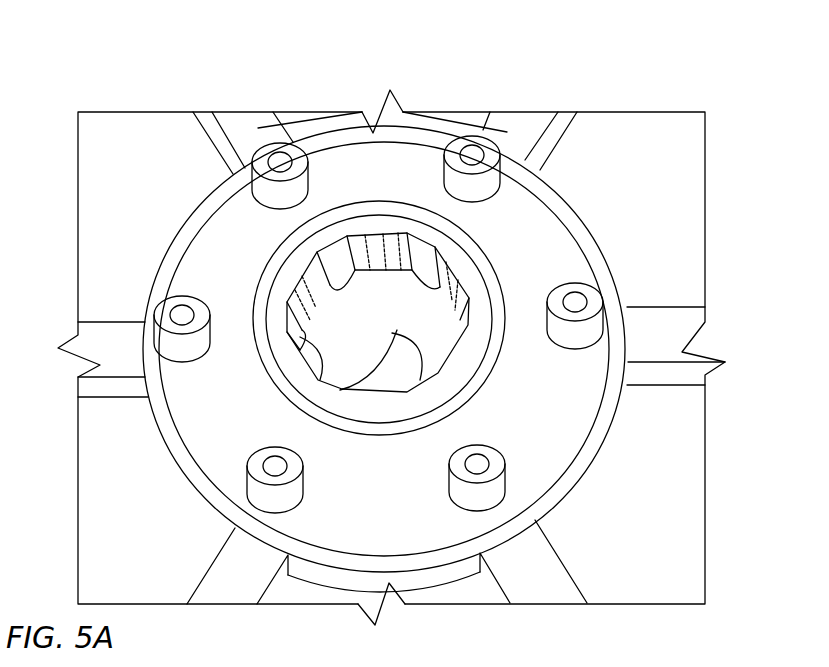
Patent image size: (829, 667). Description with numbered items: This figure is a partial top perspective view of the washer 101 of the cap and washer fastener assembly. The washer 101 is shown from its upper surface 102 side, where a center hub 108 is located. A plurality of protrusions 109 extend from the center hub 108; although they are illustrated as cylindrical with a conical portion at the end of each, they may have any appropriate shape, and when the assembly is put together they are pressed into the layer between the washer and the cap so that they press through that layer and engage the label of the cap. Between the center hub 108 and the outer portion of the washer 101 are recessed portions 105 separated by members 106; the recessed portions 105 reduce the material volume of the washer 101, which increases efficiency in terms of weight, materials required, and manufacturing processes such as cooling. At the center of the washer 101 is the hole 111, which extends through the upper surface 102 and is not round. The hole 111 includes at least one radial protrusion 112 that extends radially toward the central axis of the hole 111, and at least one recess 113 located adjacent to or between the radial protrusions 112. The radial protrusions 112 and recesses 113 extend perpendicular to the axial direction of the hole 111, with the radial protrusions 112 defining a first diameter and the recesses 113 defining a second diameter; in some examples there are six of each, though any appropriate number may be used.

The washer 101 is at (120, 86).
The upper surface 102 is at (562, 207).
The recessed portions 105 is at (185, 176).
The members 106 is at (507, 132).
The center hub 108 is at (557, 410).
The protrusions 109 is at (575, 302).
The hole 111 is at (337, 320).
The radial protrusion 112 is at (373, 395).
The recess 113 is at (430, 270).